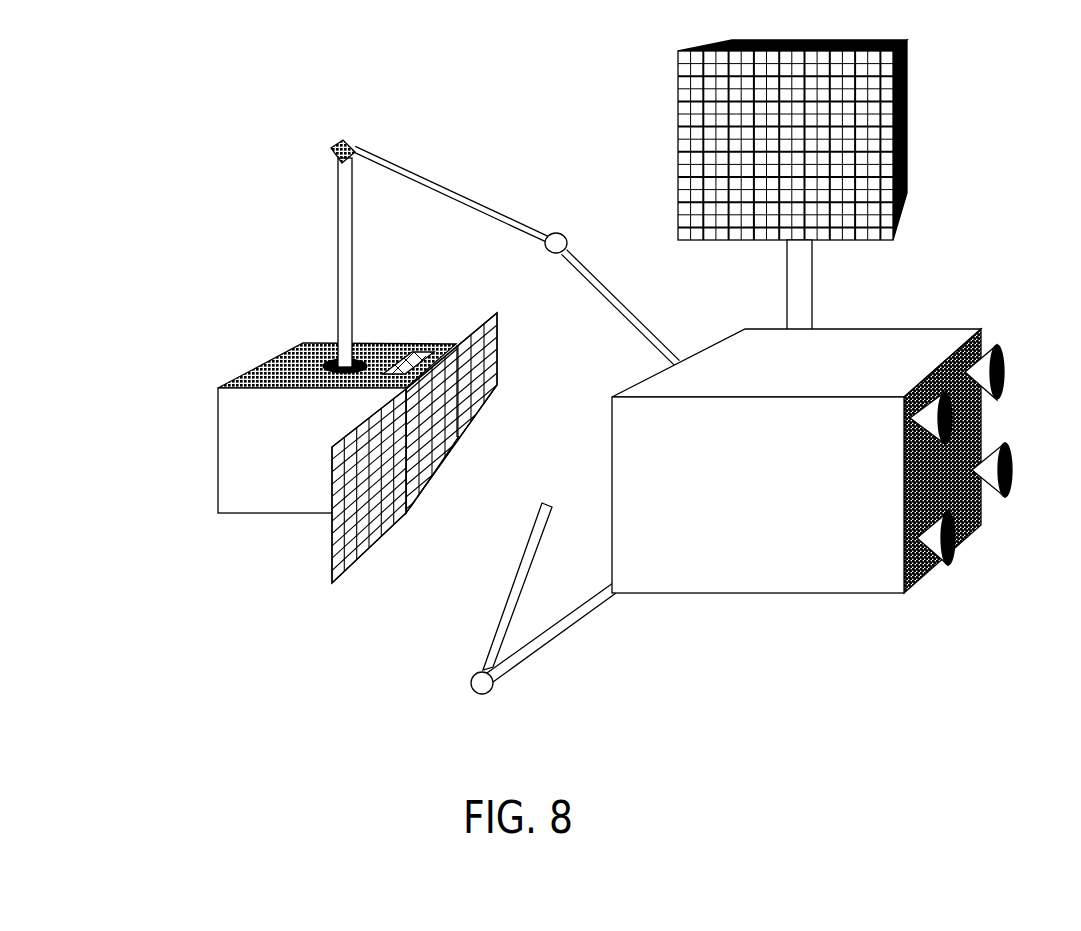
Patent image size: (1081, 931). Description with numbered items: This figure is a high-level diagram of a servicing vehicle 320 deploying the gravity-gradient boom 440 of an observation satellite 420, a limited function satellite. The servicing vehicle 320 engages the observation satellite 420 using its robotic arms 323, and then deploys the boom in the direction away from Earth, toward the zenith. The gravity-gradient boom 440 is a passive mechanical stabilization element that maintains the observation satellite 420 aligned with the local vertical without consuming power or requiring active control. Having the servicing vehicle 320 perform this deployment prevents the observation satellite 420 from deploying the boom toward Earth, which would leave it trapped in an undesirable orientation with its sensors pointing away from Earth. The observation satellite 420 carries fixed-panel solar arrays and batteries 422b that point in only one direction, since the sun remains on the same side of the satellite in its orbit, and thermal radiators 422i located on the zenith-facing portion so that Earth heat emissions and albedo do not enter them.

The servicing vehicle 320 is at (980, 333).
The robotic arms 323 is at (465, 198).
The observation satellite 420 is at (210, 425).
The solar panels and batteries 422b is at (497, 368).
The thermal radiators 422i is at (410, 355).
The gravity-gradient boom 440 is at (352, 292).